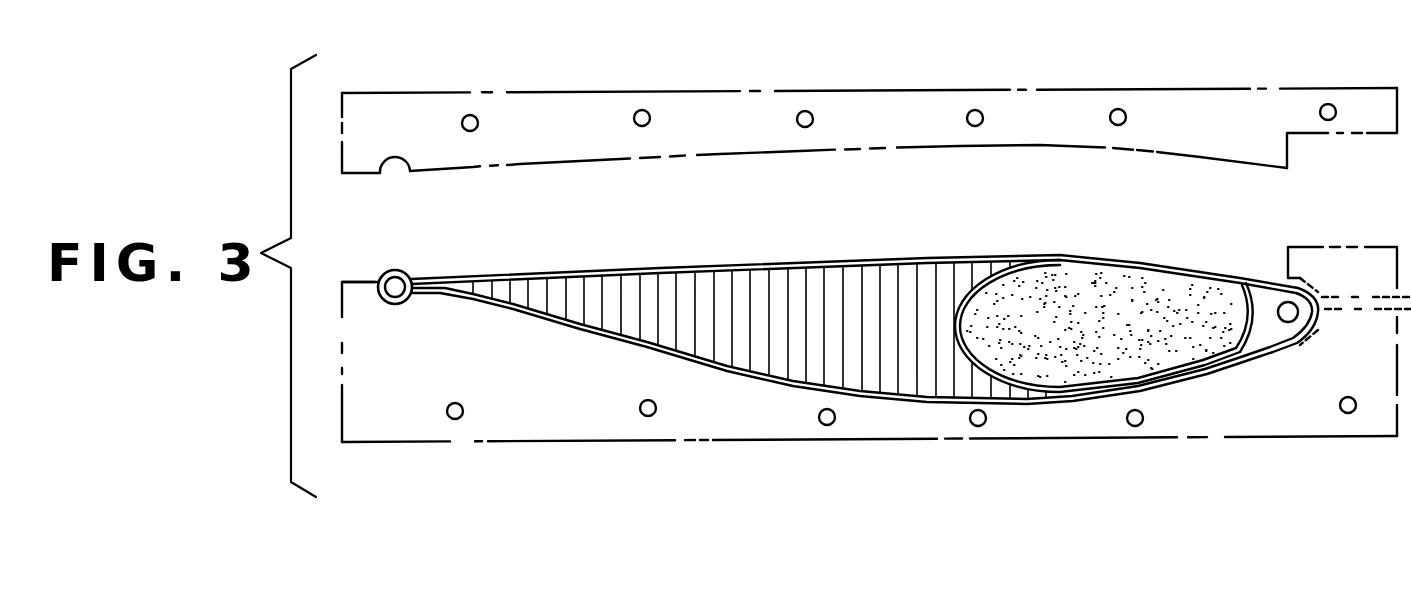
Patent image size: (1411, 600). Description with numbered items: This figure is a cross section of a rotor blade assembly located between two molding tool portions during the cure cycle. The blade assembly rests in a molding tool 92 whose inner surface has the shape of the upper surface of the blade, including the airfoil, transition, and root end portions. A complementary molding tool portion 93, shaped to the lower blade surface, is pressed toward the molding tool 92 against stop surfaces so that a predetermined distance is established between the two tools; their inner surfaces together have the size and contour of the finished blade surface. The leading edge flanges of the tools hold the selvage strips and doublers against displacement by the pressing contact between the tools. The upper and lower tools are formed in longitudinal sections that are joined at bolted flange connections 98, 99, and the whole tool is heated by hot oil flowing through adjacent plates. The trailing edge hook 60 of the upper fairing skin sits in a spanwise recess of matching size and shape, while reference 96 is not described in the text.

The trailing edge hook 60 is at (404, 299).
The molding tool 92 is at (1173, 437).
The complementary molding tool portion 93 is at (628, 91).
The mold cavity edge 96 is at (365, 282).
The bolted flange connection 98 is at (458, 420).
The bolted flange connection 99 is at (1330, 108).